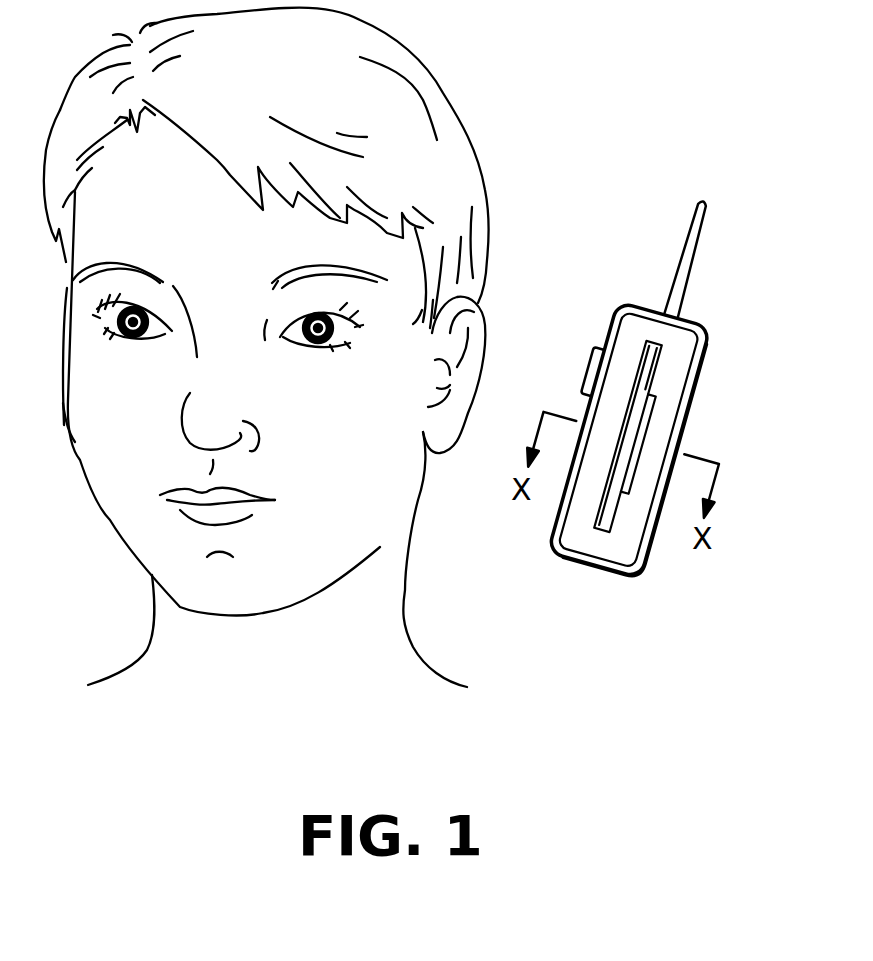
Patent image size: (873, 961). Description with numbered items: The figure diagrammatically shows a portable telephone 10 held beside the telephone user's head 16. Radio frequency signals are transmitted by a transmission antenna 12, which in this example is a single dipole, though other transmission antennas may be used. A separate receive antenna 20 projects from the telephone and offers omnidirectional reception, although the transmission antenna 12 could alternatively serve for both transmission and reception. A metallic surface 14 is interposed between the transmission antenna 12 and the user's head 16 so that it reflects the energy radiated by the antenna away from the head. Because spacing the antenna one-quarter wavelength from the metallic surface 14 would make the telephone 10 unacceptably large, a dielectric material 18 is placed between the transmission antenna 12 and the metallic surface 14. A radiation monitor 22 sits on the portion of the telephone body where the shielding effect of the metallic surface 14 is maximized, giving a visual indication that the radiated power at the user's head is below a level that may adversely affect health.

The portable telephone 10 is at (703, 338).
The transmission antenna 12 is at (652, 417).
The metallic surface 14 is at (590, 553).
The telephone user's head 16 is at (110, 522).
The dielectric material 18 is at (602, 533).
The receive antenna 20 is at (695, 258).
The radiation monitor 22 is at (590, 362).